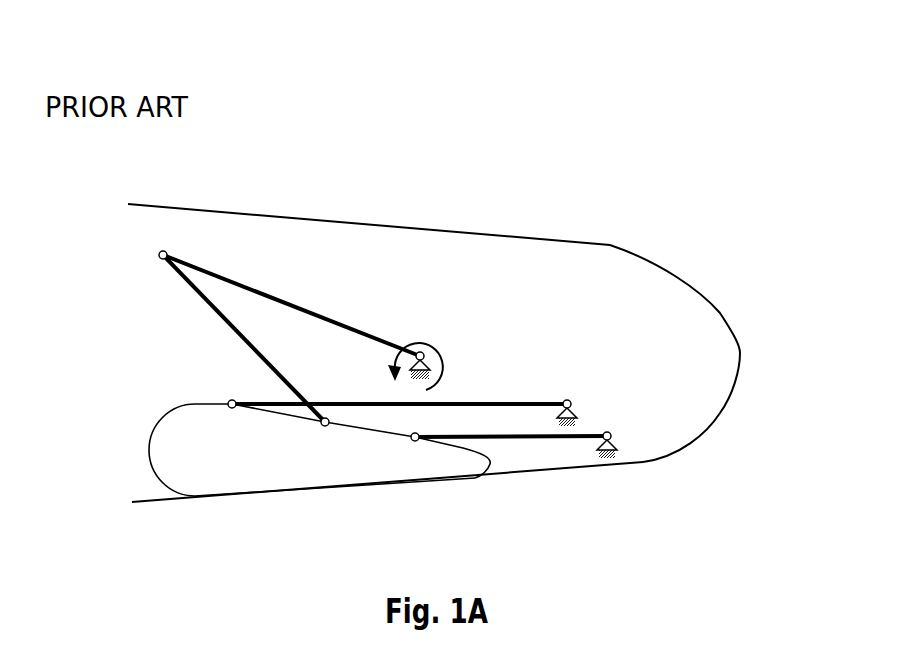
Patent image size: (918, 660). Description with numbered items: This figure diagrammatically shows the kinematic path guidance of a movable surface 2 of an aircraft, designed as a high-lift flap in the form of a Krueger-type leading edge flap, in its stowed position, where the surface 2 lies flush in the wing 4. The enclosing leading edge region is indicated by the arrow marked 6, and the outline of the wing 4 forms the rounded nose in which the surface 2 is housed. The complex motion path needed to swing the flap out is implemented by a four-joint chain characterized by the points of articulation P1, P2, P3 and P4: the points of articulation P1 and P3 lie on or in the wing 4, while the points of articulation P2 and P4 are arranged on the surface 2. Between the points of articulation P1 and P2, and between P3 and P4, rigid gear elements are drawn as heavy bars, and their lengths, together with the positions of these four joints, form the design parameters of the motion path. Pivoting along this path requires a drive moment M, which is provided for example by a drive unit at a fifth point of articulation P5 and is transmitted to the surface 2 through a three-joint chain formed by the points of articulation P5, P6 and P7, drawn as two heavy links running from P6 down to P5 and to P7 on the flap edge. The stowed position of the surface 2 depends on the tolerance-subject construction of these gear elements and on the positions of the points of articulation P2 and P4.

The movable surface 2 is at (267, 479).
The wing 4 is at (610, 277).
The flap arrangement 6 is at (520, 168).
The point of articulation P1 is at (581, 398).
The point of articulation P2 is at (227, 421).
The point of articulation P3 is at (625, 433).
The point of articulation P4 is at (413, 451).
The fifth point of articulation P5 is at (440, 347).
The point of articulation P6 is at (179, 241).
The point of articulation P7 is at (325, 438).
The drive moment M is at (434, 366).